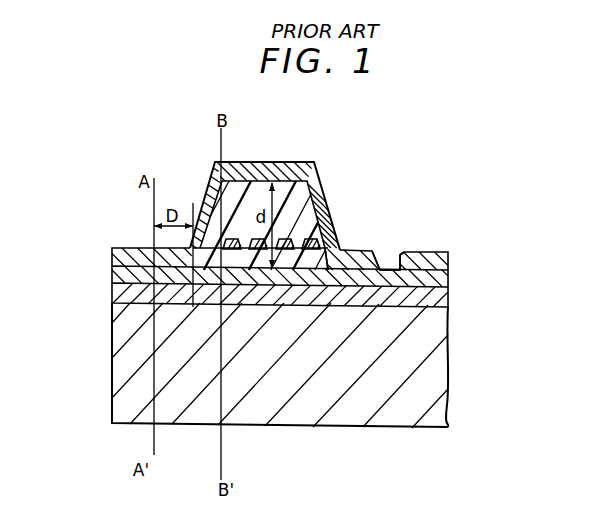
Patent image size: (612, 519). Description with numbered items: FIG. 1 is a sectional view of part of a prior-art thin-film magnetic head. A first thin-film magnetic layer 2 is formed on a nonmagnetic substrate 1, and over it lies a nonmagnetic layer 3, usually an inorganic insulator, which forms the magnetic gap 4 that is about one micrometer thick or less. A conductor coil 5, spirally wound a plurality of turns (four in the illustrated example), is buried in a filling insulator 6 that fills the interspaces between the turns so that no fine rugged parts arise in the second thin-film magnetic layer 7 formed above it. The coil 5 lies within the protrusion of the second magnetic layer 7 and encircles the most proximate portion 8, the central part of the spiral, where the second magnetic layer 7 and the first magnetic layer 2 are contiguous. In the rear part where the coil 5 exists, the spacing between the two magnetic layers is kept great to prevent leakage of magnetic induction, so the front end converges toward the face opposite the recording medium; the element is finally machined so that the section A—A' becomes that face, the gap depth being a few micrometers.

The nonmagnetic substrate 1 is at (432, 385).
The first thin-film magnetic layer 2 is at (440, 298).
The nonmagnetic layer 3 is at (122, 277).
The magnetic gap 4 is at (103, 270).
The conductor coil 5 is at (306, 240).
The filling insulator 6 is at (305, 199).
The second thin-film magnetic layer 7 is at (209, 178).
The most proximate portion 8 is at (384, 284).